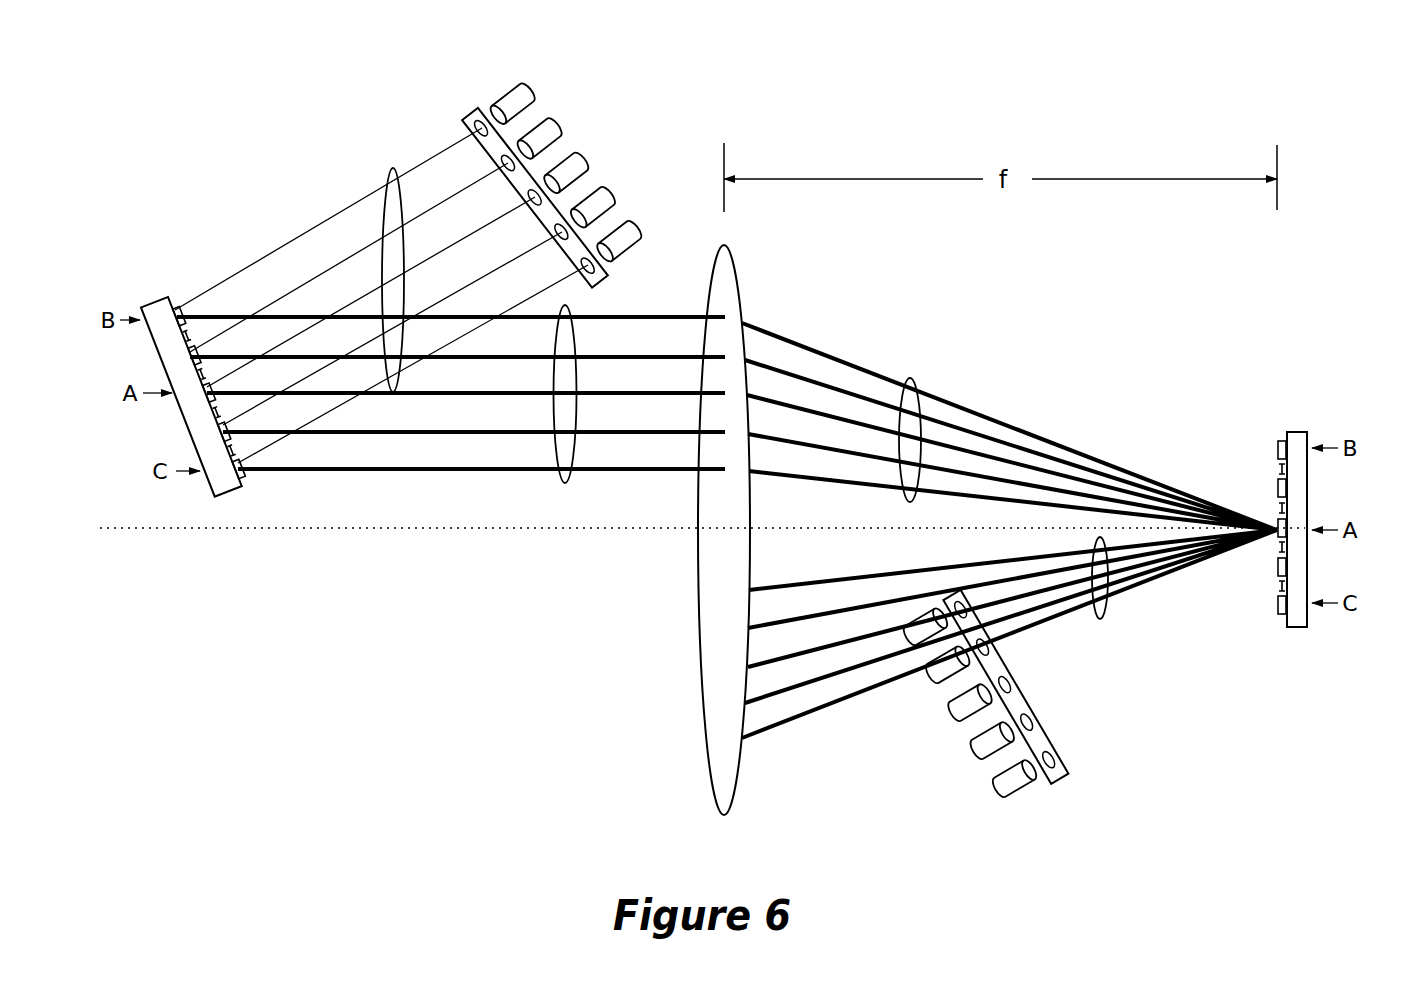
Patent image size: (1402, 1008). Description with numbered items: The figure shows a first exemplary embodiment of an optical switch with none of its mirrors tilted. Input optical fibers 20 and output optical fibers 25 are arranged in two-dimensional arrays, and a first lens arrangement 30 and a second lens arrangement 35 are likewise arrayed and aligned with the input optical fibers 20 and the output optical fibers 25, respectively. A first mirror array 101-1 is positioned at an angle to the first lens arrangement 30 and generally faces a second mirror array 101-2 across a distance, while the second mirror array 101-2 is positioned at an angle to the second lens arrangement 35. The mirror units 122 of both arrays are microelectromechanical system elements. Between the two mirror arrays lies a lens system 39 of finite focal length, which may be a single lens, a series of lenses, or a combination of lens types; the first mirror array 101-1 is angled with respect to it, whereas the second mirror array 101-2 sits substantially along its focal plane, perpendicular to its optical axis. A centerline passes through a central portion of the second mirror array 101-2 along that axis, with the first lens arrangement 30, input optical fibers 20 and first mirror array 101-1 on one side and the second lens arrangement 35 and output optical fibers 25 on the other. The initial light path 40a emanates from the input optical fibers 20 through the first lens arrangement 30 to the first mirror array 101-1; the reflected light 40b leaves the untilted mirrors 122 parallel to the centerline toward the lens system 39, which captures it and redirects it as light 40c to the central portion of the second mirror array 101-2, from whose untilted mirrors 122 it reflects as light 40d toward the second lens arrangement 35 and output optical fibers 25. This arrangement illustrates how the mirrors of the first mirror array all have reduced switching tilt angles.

The input optical fibers 20 is at (507, 92).
The output optical fibers 25 is at (1022, 796).
The first lens arrangement 30 is at (467, 112).
The second lens arrangement 35 is at (1063, 785).
The lens system 39 is at (698, 628).
The initial light path 40a is at (393, 165).
The reflected light 40b is at (567, 487).
The redirected light path 40c is at (910, 374).
The output light path 40d is at (1100, 621).
The first mirror array 101-1 is at (143, 300).
The second mirror array 101-2 is at (1295, 428).
The mirror units 122 is at (180, 305).